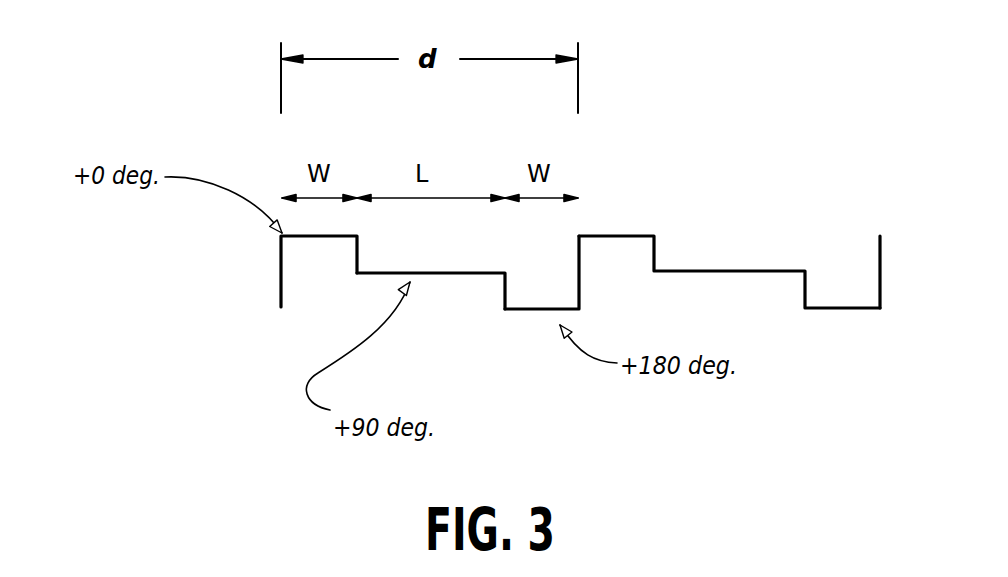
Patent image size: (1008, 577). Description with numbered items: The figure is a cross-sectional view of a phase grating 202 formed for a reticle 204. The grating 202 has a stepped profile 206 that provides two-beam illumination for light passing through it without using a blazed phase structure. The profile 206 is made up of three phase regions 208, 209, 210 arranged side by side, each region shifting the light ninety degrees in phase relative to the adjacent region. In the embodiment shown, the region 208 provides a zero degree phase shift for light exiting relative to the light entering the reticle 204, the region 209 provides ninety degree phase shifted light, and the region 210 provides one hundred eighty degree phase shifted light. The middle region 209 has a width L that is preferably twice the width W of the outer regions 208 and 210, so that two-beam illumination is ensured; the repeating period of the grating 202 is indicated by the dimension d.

The phase grating 202 is at (696, 85).
The reticle 204 is at (827, 379).
The profile 206 is at (660, 228).
The phase region 208 is at (315, 245).
The phase region 209 is at (460, 280).
The phase region 210 is at (528, 315).